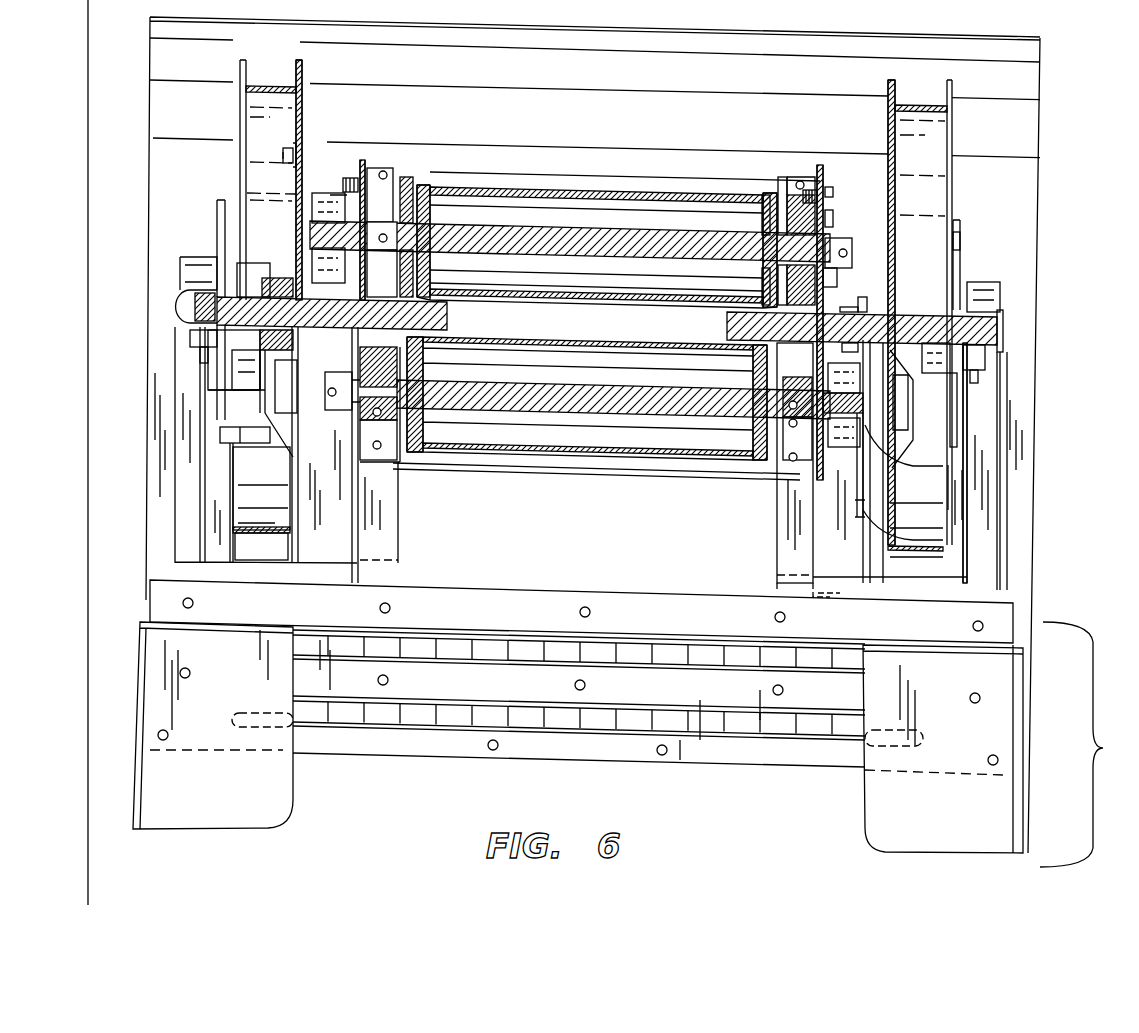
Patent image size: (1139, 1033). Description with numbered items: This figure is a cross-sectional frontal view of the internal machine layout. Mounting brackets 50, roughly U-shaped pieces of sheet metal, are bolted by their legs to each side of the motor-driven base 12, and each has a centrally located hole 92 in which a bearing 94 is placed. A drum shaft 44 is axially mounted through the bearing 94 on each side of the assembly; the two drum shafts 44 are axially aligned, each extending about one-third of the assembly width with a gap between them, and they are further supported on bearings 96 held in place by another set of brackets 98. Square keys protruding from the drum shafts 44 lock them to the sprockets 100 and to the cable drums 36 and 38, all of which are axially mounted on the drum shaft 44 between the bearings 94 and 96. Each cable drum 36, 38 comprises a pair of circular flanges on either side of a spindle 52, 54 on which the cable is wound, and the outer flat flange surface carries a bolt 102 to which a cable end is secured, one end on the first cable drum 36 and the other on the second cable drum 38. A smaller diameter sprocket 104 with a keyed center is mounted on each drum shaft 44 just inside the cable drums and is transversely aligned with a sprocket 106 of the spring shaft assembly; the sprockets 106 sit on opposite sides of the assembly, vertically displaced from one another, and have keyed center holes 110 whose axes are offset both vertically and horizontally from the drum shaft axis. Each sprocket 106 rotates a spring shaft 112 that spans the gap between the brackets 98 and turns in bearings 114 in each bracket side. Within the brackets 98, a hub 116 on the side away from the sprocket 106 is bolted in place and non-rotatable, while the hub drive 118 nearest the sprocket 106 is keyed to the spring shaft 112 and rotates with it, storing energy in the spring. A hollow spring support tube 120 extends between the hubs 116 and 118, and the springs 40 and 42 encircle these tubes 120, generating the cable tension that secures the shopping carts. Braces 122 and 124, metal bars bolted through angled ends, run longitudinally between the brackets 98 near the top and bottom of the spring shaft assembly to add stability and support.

The motor-driven base 12 is at (632, 723).
The first cable drum 36 is at (935, 145).
The second cable drum 38 is at (250, 108).
The spring 40 is at (698, 190).
The spring 42 is at (693, 460).
The drum shaft 44 is at (243, 297).
The mounting bracket 50 is at (967, 443).
The spindle 52 is at (913, 110).
The spindle 54 is at (272, 85).
The hole 92 is at (987, 352).
The bearing 94 is at (983, 308).
The bearing 96 is at (828, 312).
The bracket 98 is at (813, 553).
The sprocket 100 is at (957, 263).
The bolt 102 is at (297, 155).
The smaller diameter sprocket 104 is at (890, 297).
The sprocket 106 is at (943, 540).
The keyed center hole 110 is at (943, 466).
The spring shaft 112 is at (590, 230).
The bearing 114 is at (842, 235).
The hub 116 is at (790, 190).
The hub drive 118 is at (408, 178).
The spring support tube 120 is at (533, 185).
The brace 122 is at (485, 170).
The brace 124 is at (480, 470).